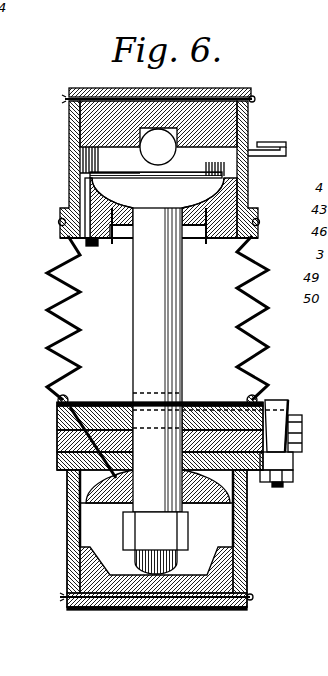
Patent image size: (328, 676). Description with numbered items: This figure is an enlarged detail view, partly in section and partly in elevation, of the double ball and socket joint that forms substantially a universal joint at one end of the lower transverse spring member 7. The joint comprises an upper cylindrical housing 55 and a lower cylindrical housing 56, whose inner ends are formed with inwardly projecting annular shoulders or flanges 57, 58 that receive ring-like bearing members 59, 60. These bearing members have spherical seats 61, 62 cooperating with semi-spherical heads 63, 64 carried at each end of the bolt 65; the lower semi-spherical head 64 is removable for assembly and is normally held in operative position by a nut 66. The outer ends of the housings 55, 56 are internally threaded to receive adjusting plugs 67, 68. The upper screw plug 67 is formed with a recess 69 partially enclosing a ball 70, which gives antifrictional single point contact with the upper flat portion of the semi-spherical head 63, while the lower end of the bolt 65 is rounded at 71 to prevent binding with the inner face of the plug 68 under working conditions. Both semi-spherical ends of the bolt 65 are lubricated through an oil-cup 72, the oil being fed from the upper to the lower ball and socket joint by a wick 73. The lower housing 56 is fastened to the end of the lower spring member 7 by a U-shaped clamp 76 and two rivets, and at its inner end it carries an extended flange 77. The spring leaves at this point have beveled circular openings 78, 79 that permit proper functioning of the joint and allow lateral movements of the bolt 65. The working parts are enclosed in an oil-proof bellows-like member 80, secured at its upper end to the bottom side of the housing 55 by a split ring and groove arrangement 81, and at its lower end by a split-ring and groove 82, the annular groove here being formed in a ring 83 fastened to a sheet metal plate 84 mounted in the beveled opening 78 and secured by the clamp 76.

The lower spring member 7 is at (60, 437).
The upper cylindrical housing 55 is at (70, 173).
The lower cylindrical housing 56 is at (67, 518).
The annular shoulder 57 is at (220, 238).
The annular shoulder 58 is at (186, 432).
The ring-like bearing member 59 is at (112, 240).
The ring-like bearing member 60 is at (108, 455).
The spherical seat 61 is at (88, 193).
The spherical seat 62 is at (86, 484).
The semi-spherical head 63 is at (250, 188).
The semi-spherical head 64 is at (200, 500).
The bolt 65 is at (162, 332).
The nut 66 is at (180, 532).
The adjusting plug 67 is at (80, 118).
The adjusting plug 68 is at (80, 577).
The recess 69 is at (213, 122).
The ball 70 is at (147, 152).
The rounded end 71 is at (165, 562).
The oil-cup 72 is at (284, 145).
The wick 73 is at (86, 226).
The U-shaped clamp 76 is at (275, 402).
The extended flange 77 is at (286, 462).
The beveled circular opening 78 is at (60, 419).
The beveled circular opening 79 is at (62, 444).
The bellows-like member 80 is at (60, 330).
The split ring and groove arrangement 81 is at (58, 222).
The split-ring and groove 82 is at (58, 397).
The ring 83 is at (70, 401).
The sheet metal plate 84 is at (218, 442).